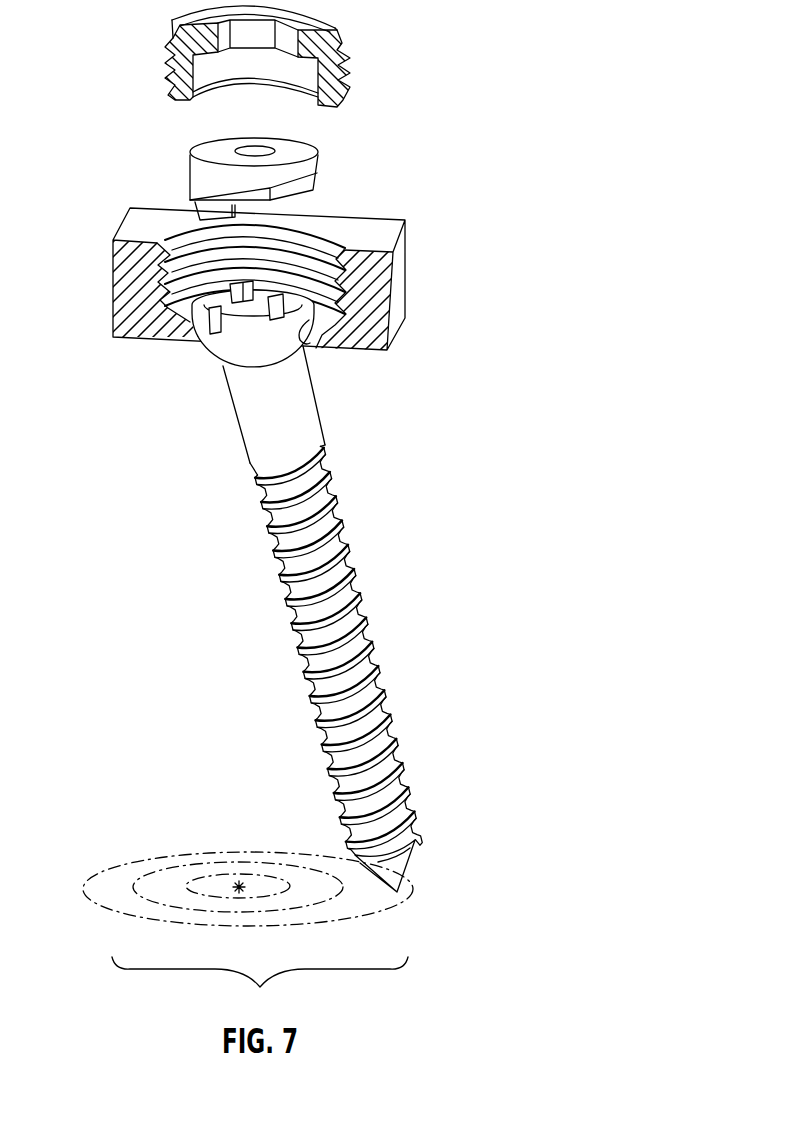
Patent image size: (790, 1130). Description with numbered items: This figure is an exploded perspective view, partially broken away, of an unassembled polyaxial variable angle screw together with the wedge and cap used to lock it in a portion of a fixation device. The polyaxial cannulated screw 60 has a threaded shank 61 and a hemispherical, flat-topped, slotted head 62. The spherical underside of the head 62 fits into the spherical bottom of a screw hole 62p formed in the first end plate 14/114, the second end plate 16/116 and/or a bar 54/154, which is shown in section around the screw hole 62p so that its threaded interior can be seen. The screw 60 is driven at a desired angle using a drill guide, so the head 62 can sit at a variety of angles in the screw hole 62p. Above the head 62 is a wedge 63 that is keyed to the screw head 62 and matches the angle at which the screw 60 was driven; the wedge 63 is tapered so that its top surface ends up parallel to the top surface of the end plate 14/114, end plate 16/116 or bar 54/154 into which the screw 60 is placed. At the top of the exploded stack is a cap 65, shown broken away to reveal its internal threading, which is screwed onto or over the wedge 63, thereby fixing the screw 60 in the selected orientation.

The cap 65 is at (342, 28).
The wedge 63 is at (318, 143).
The first end plate 14 is at (332, 268).
The first end plate 114 is at (255, 280).
The second end plate 16 is at (255, 280).
The second end plate 116 is at (255, 280).
The bar 54 is at (255, 280).
The bar 154 is at (378, 220).
The head 62 is at (260, 352).
The screw hole 62p is at (306, 343).
The polyaxial cannulated screw 60 is at (285, 586).
The threaded shank 61 is at (280, 565).